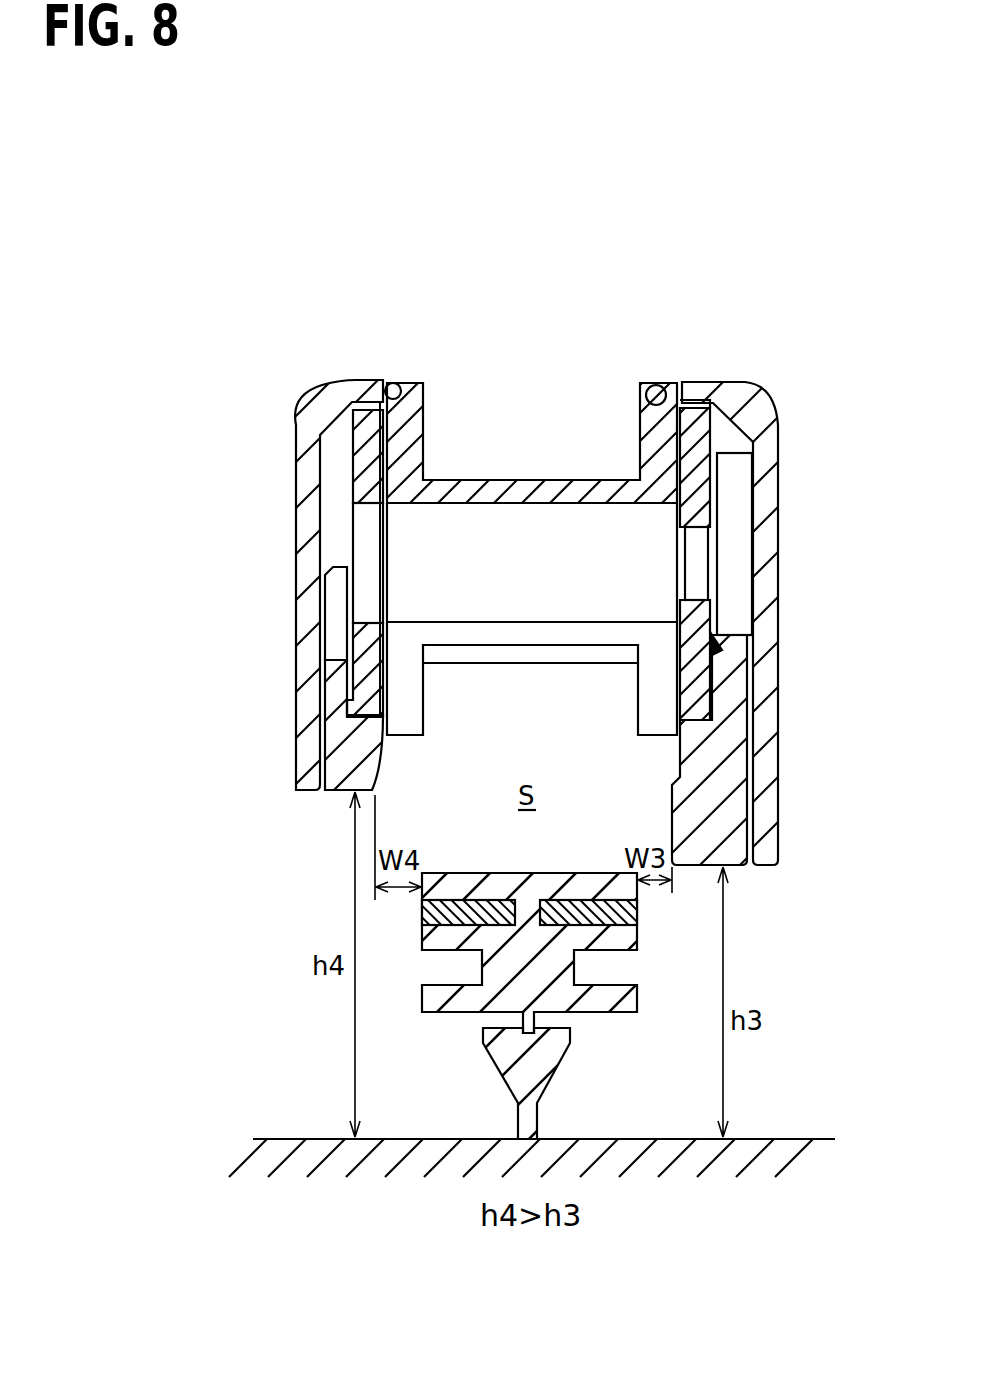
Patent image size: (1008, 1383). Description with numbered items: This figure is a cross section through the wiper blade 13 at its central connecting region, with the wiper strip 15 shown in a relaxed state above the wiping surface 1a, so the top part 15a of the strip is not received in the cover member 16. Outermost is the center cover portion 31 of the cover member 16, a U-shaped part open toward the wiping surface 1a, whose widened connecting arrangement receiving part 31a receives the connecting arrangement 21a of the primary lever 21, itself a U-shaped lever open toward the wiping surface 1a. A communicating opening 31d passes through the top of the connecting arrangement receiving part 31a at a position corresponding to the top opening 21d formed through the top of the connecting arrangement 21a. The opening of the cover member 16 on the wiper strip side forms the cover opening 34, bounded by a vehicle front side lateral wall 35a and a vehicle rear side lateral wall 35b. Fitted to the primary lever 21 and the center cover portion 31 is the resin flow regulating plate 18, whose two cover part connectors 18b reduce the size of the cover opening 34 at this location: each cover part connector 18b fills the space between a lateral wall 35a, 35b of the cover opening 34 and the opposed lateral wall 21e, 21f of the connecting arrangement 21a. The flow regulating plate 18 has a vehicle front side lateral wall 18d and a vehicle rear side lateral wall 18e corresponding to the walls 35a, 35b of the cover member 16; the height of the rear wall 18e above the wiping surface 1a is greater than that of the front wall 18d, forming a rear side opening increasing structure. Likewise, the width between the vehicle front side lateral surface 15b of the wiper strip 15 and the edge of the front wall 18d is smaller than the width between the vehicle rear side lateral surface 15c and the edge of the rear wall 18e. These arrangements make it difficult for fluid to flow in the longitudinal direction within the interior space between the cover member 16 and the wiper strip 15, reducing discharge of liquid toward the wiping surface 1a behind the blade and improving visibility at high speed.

The wiper blade 13 is at (808, 362).
The cover member 16 is at (312, 393).
The center cover portion 31 is at (737, 385).
The connecting arrangement receiving part 31a is at (758, 405).
The communicating opening 31d is at (392, 384).
The primary lever 21 is at (748, 438).
The connecting arrangement 21a is at (713, 485).
The top opening 21d is at (660, 385).
The opposed lateral wall 21e is at (718, 647).
The opposed lateral wall 21f is at (372, 696).
The cover opening 34 is at (768, 766).
The flow regulating plate 18 is at (363, 794).
The cover part connector 18b is at (375, 780).
The vehicle front side lateral wall 18d is at (733, 868).
The vehicle rear side lateral wall 18e is at (352, 795).
The vehicle front side lateral wall 35a is at (763, 868).
The vehicle rear side lateral wall 35b is at (305, 795).
The wiper strip 15 is at (539, 928).
The contact top surface 15a is at (510, 875).
The vehicle front side lateral surface 15b is at (637, 905).
The vehicle rear side lateral surface 15c is at (422, 900).
The wiping surface 1a is at (812, 1139).